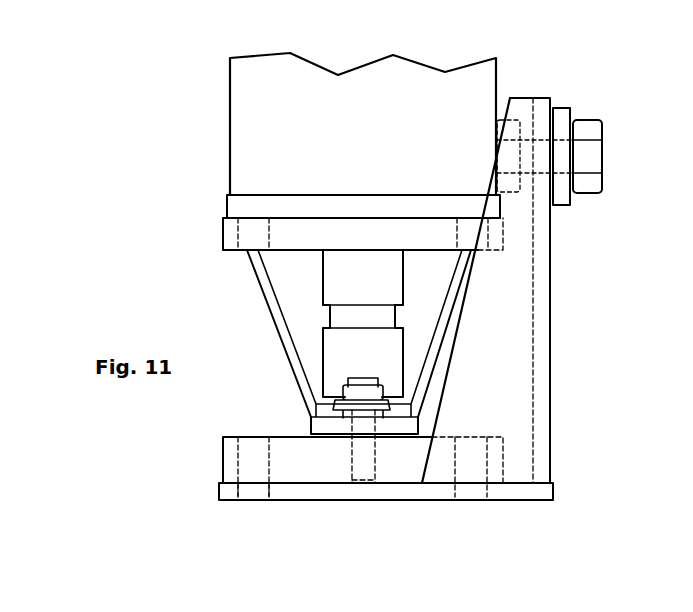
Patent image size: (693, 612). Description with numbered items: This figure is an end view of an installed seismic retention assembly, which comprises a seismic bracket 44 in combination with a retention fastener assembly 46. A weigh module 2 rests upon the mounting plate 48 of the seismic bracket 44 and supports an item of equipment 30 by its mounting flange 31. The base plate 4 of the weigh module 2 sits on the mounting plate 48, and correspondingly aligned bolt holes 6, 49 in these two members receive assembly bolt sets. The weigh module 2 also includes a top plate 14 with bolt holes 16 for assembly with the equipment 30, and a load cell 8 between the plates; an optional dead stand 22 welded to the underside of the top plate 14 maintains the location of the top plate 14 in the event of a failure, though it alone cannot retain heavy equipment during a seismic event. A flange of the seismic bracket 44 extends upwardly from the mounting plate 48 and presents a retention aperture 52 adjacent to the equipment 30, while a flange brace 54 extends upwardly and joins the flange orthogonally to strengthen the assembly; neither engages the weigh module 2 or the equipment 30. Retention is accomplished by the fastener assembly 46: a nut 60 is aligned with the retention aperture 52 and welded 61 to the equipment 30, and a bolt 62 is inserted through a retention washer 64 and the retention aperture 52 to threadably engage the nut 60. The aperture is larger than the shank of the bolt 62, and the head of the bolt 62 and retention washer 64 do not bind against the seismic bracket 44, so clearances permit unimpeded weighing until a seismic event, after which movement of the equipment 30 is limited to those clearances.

The weigh module 2 is at (334, 366).
The base plate 4 is at (223, 462).
The bolt holes 6 is at (269, 468).
The load cell 8 is at (286, 375).
The top plate 14 is at (223, 236).
The bolt holes 16 is at (270, 244).
The dead stand 22 is at (268, 313).
The item of equipment 30 is at (230, 103).
The mounting flange 31 is at (227, 200).
The seismic bracket 44 is at (544, 290).
The retention fastener assembly 46 is at (561, 149).
The mounting plate 48 is at (219, 491).
The bolt holes 49 is at (238, 498).
The retention aperture 52 is at (543, 190).
The flange brace 54 is at (443, 388).
The nut 60 is at (520, 122).
The weld 61 is at (500, 130).
The bolt 62 is at (602, 150).
The retention washer 64 is at (568, 207).